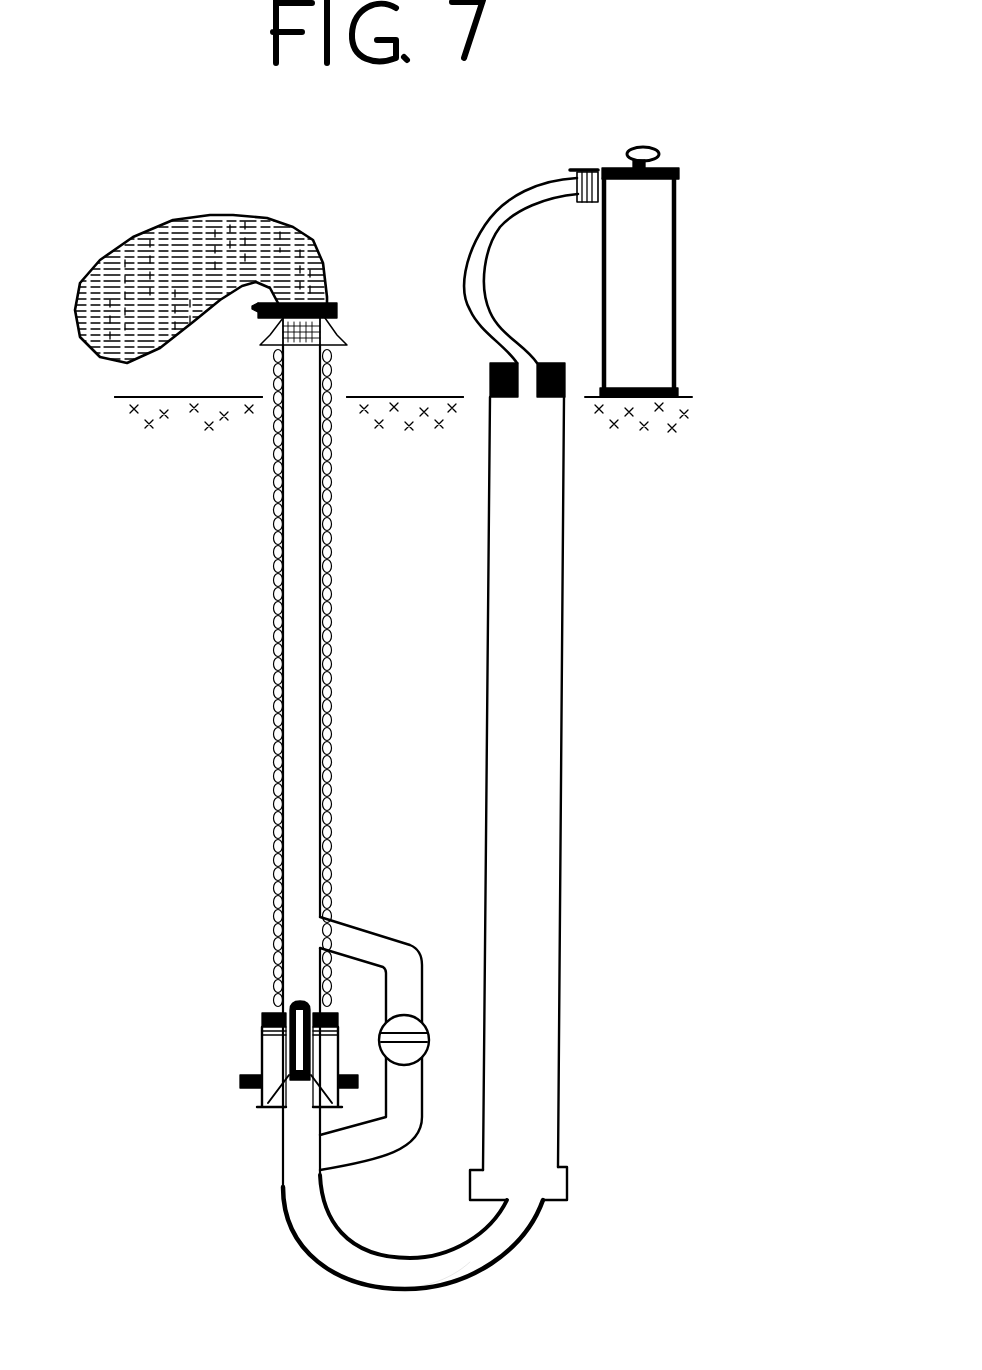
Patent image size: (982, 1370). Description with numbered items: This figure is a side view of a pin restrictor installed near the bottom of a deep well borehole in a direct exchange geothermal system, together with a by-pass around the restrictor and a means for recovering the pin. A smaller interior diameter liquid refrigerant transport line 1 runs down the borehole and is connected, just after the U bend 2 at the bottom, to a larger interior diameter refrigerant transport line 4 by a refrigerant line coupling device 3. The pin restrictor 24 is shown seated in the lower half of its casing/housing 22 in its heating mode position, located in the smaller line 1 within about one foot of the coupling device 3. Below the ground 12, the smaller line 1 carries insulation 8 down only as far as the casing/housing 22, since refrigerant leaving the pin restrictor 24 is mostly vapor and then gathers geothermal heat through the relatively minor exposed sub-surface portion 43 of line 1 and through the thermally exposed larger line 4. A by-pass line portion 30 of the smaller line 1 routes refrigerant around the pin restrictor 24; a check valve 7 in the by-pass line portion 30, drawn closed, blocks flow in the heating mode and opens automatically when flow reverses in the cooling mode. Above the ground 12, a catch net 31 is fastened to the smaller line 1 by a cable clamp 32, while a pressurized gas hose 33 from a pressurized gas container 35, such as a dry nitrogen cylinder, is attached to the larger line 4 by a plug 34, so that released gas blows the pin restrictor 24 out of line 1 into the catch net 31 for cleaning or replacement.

The smaller interior diameter liquid/fluid refrigerant transport line 1 is at (297, 533).
The U bend 2 is at (419, 1257).
The refrigerant line coupling device 3 is at (568, 1180).
The larger interior diameter liquid/fluid refrigerant transport line 4 is at (537, 530).
The check valve 7 is at (427, 1037).
The insulation 8 is at (332, 636).
The ground 12 is at (403, 392).
The casing/housing 22 is at (262, 1047).
The pin restrictor 24 is at (297, 1002).
The by-pass line portion 30 is at (370, 930).
The catch net 31 is at (147, 259).
The cable clamp 32 is at (334, 303).
The pressurized gas hose 33 is at (478, 245).
The plug 34 is at (557, 362).
The pressurized gas container 35 is at (635, 258).
The exposed sub-surface portion 43 is at (298, 1190).